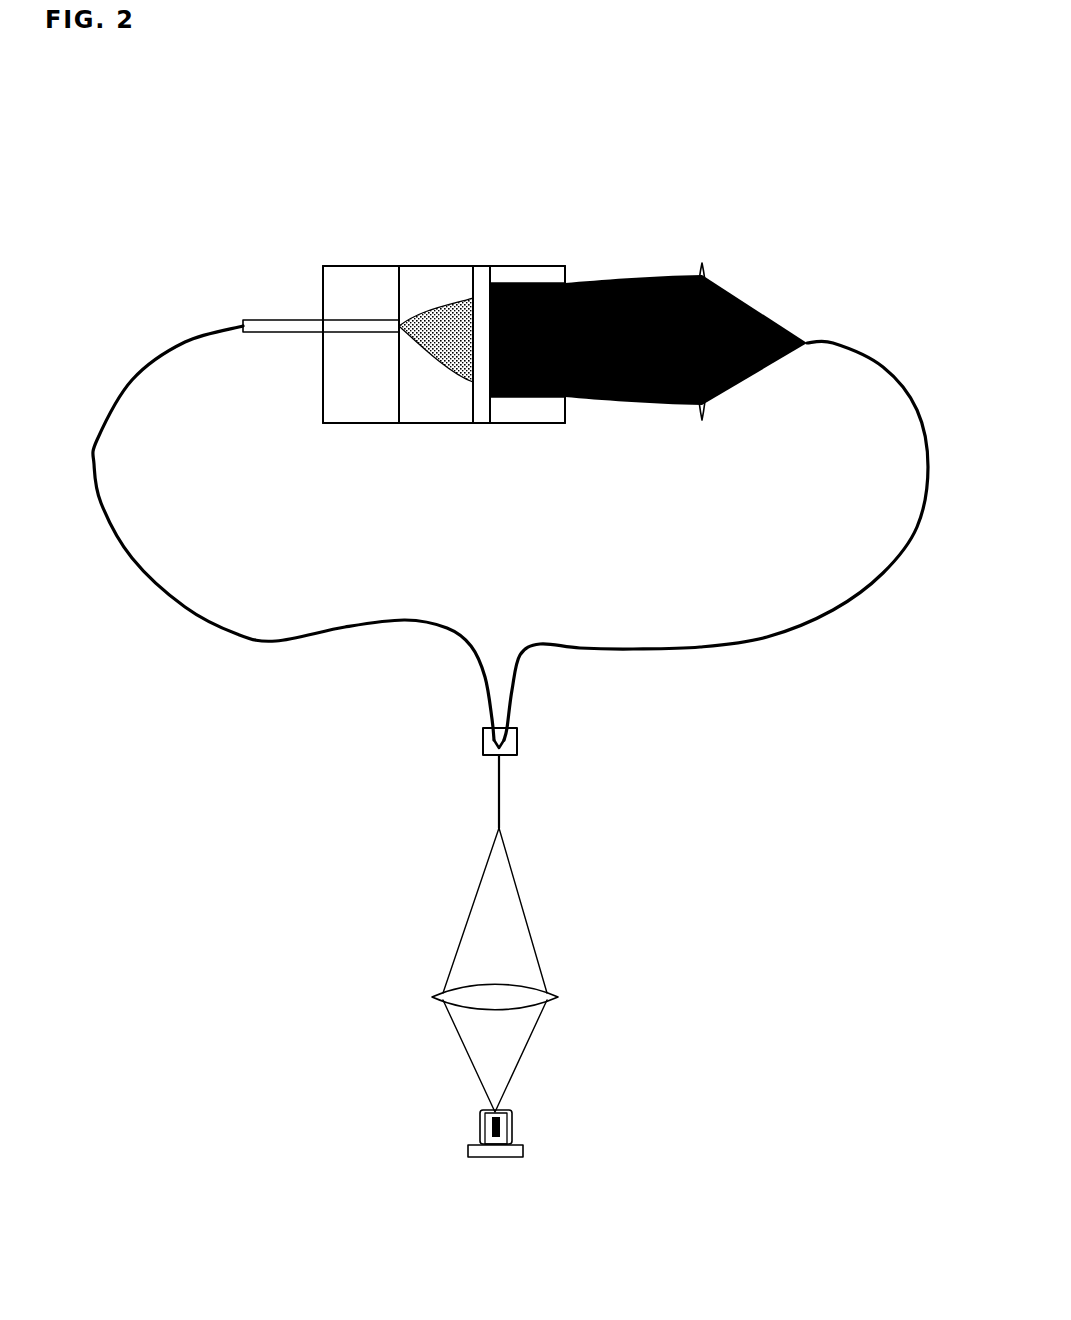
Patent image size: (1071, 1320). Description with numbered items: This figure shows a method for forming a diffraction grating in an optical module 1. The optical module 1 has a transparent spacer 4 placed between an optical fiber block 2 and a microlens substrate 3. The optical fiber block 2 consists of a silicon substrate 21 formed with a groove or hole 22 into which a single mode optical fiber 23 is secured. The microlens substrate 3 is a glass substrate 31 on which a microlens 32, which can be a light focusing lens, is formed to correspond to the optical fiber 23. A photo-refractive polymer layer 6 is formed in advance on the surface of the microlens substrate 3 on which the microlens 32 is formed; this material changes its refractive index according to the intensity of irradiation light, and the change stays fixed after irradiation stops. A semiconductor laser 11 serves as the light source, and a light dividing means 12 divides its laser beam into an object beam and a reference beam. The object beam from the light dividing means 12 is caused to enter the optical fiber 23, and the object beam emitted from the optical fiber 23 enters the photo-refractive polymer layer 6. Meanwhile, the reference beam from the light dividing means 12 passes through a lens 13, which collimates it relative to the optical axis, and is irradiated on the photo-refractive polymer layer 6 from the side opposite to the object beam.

The optical module 1 is at (420, 332).
The optical fiber block 2 is at (339, 320).
The silicon substrate 21 is at (333, 372).
The groove or hole 22 is at (385, 329).
The single mode optical fiber 23 is at (262, 325).
The microlens substrate 3 is at (565, 258).
The glass substrate 31 is at (517, 280).
The microlens 32 is at (510, 393).
The transparent spacer 4 is at (417, 413).
The photo-refractive polymer layer 6 is at (480, 413).
The semiconductor laser 11 is at (495, 1145).
The light dividing means 12 is at (483, 743).
The lens 13 is at (706, 278).